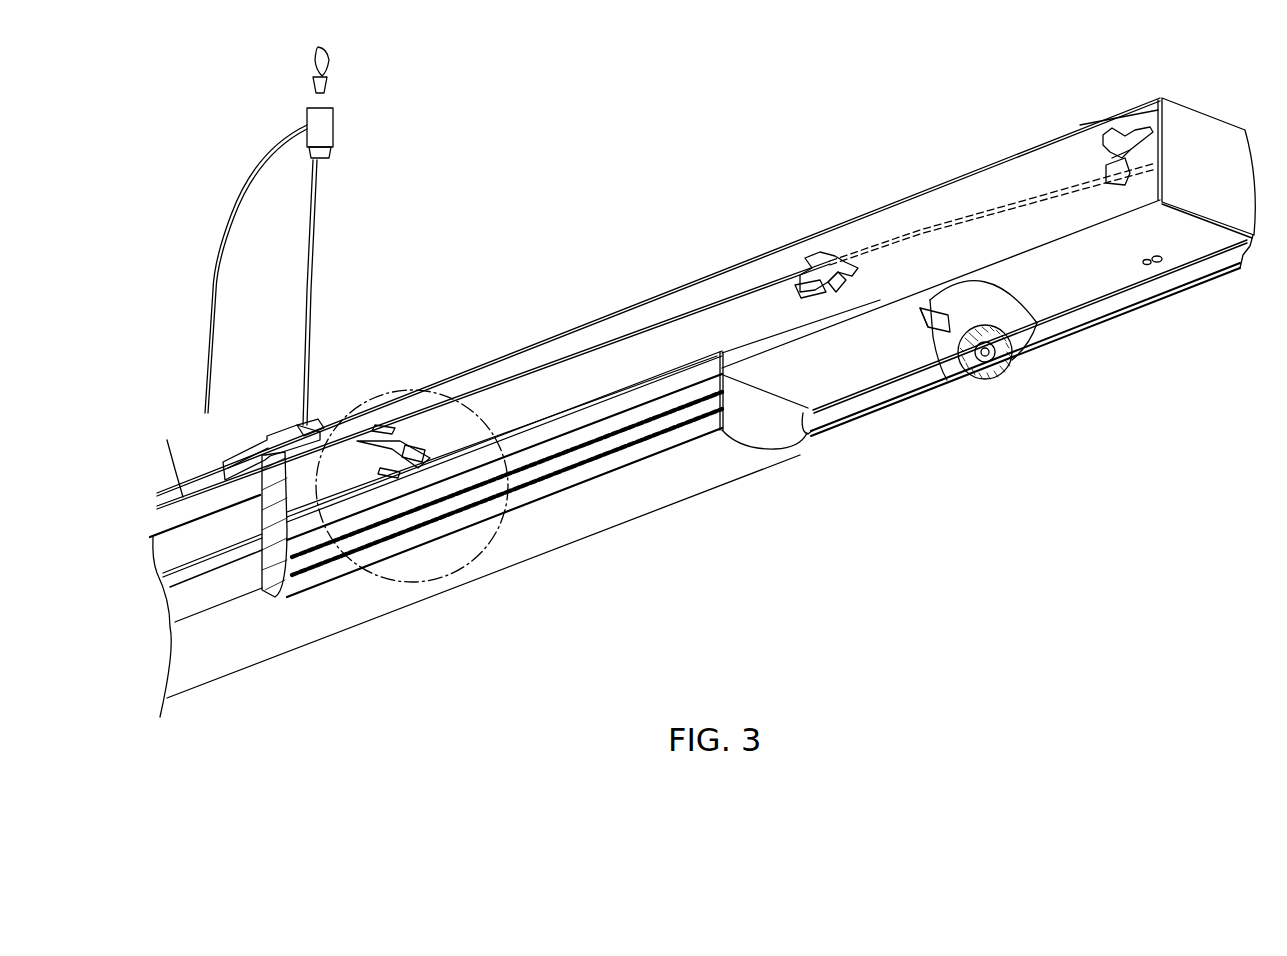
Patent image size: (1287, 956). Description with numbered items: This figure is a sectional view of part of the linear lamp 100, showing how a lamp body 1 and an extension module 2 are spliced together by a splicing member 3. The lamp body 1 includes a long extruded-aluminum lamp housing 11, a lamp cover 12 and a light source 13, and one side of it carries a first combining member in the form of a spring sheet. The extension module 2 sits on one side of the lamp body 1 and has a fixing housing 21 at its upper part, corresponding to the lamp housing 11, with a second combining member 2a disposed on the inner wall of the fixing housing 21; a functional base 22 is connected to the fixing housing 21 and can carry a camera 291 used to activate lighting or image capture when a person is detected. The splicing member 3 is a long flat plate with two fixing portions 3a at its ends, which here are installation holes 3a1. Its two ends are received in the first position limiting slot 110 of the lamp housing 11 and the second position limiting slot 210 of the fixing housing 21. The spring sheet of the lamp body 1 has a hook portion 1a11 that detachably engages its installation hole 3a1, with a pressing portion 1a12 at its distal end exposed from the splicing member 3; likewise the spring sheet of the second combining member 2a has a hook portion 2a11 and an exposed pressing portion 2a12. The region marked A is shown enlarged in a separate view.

The linear lamp 100 is at (490, 294).
The lamp body 1 is at (567, 548).
The lamp housing 11 is at (190, 470).
The first position limiting slot 110 is at (298, 427).
The lamp cover 12 is at (658, 488).
The light source 13 is at (502, 497).
The hook portion 1a11 is at (420, 470).
The pressing portion 1a12 is at (375, 500).
The extension module 2 is at (950, 170).
The second combining member 2a is at (835, 247).
The hook portion 2a11 is at (820, 300).
The pressing portion 2a12 is at (866, 305).
The fixing housing 21 is at (1088, 123).
The second position limiting slot 210 is at (1052, 205).
The functional base 22 is at (1105, 283).
The camera 291 is at (1002, 355).
The splicing member 3 is at (600, 330).
The fixing portion 3a is at (478, 500).
The installation hole 3a1 is at (415, 455).
The A portion A is at (400, 375).